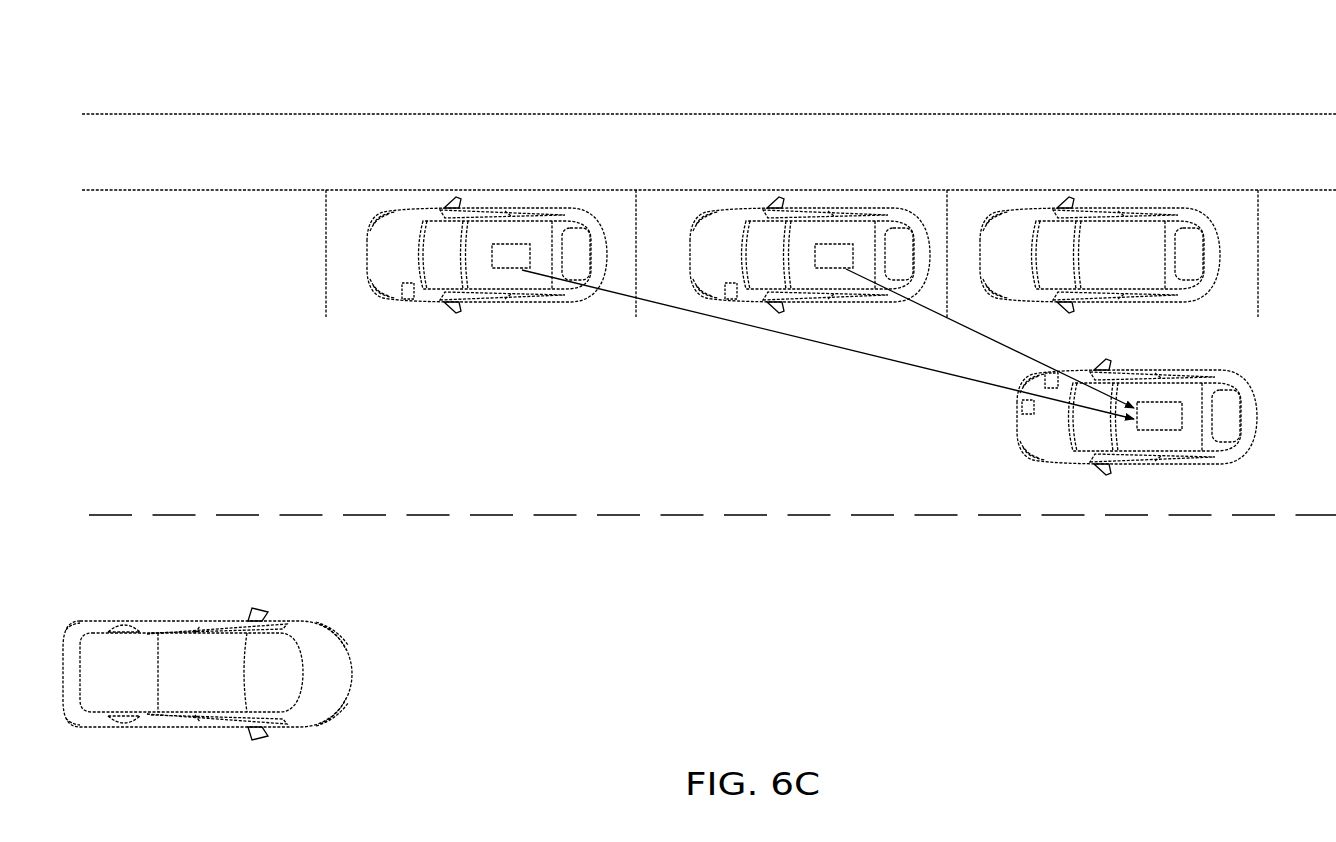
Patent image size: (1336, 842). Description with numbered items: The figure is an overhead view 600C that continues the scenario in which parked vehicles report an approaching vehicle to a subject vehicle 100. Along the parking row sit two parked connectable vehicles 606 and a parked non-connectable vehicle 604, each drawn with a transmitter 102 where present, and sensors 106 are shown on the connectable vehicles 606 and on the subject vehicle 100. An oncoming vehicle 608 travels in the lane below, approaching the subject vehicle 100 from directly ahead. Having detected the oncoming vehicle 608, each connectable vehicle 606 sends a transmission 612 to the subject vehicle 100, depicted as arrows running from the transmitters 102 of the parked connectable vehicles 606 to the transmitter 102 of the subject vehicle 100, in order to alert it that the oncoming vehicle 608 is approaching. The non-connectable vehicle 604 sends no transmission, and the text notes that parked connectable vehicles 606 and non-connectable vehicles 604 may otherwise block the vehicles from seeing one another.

The overhead view 600C is at (1215, 90).
The subject vehicle 100 is at (1070, 464).
The transmitter 102 is at (511, 256).
The sensor 106 is at (410, 283).
The non-connectable vehicle 604 is at (1032, 303).
The connectable vehicle 606 is at (440, 304).
The oncoming vehicle 608 is at (185, 690).
The transmission 612 is at (975, 333).